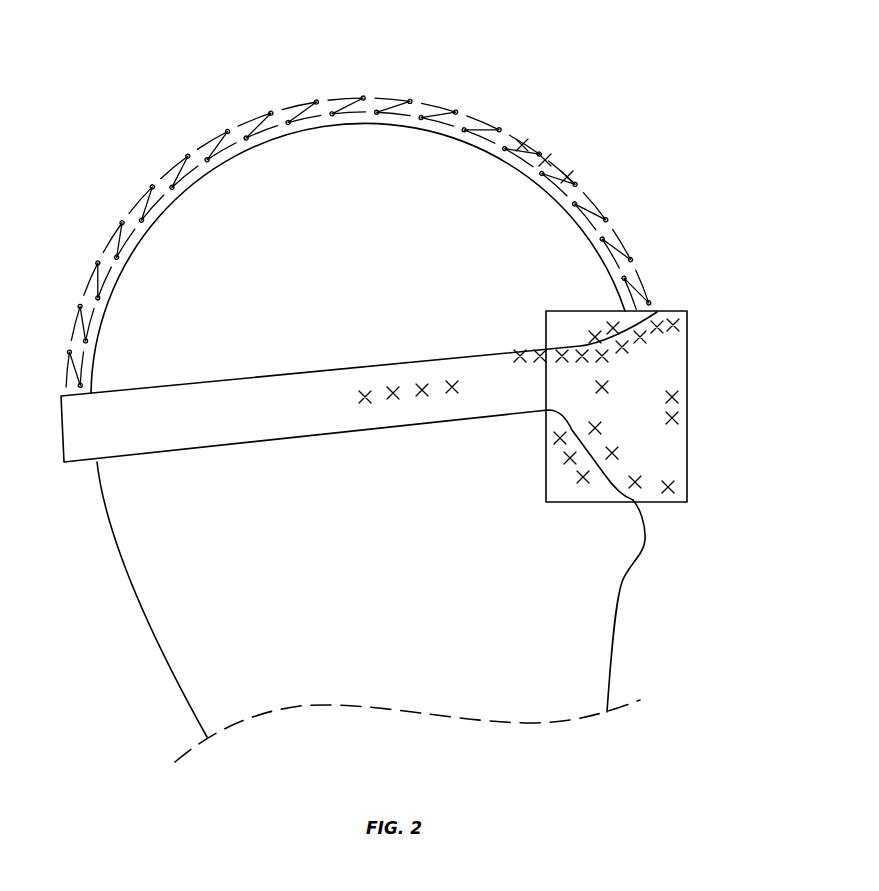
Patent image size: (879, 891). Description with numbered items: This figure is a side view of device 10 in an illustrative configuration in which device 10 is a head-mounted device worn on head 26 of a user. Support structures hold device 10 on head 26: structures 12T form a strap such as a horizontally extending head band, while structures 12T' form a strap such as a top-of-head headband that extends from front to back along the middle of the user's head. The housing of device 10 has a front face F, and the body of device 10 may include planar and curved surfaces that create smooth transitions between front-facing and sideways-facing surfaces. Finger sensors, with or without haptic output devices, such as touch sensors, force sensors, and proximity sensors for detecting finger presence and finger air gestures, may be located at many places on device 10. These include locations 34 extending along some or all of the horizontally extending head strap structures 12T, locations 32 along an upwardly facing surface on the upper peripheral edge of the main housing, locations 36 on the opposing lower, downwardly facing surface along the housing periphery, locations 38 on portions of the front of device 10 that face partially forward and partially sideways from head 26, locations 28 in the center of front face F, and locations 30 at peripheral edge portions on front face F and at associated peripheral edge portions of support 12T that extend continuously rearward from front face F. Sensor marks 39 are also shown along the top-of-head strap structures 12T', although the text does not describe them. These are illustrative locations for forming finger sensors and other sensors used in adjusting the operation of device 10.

The device 10 is at (712, 304).
The structures 12T is at (359, 410).
The structures 12T' is at (359, 214).
The head 26 is at (128, 574).
The locations 28 is at (679, 417).
The locations 30 is at (627, 358).
The locations 32 is at (612, 324).
The locations 34 is at (451, 393).
The locations 36 is at (578, 477).
The locations 38 is at (665, 483).
The sensors 39 is at (569, 172).
The front face F is at (736, 330).